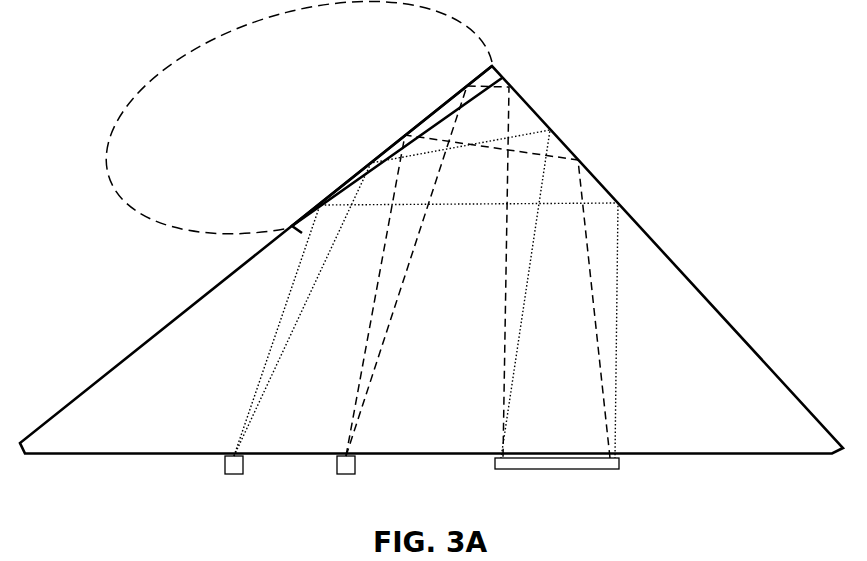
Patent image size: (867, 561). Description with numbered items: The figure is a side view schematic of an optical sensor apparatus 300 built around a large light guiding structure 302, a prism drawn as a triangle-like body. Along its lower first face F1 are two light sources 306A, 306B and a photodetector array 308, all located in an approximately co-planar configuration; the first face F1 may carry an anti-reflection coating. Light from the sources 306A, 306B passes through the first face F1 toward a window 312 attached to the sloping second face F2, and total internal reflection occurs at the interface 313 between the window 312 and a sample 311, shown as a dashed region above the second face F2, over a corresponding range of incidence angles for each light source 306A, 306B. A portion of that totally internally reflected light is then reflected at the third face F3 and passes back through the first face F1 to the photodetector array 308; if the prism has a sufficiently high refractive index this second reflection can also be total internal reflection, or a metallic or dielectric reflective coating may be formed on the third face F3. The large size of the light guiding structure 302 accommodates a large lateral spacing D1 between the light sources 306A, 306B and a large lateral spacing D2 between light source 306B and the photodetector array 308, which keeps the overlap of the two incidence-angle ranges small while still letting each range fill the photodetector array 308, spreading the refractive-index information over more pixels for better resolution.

The optical sensor apparatus 300 is at (710, 106).
The light guiding structure 302 is at (633, 221).
The light source 306A is at (231, 475).
The light source 306B is at (343, 455).
The photodetector array 308 is at (573, 467).
The sample 311 is at (318, 105).
The window 312 is at (292, 226).
The interface 313 is at (353, 172).
The first face F1 is at (383, 452).
The second face F2 is at (196, 310).
The third face F3 is at (660, 250).
The lateral spacing D1 is at (346, 498).
The lateral spacing D2 is at (495, 477).